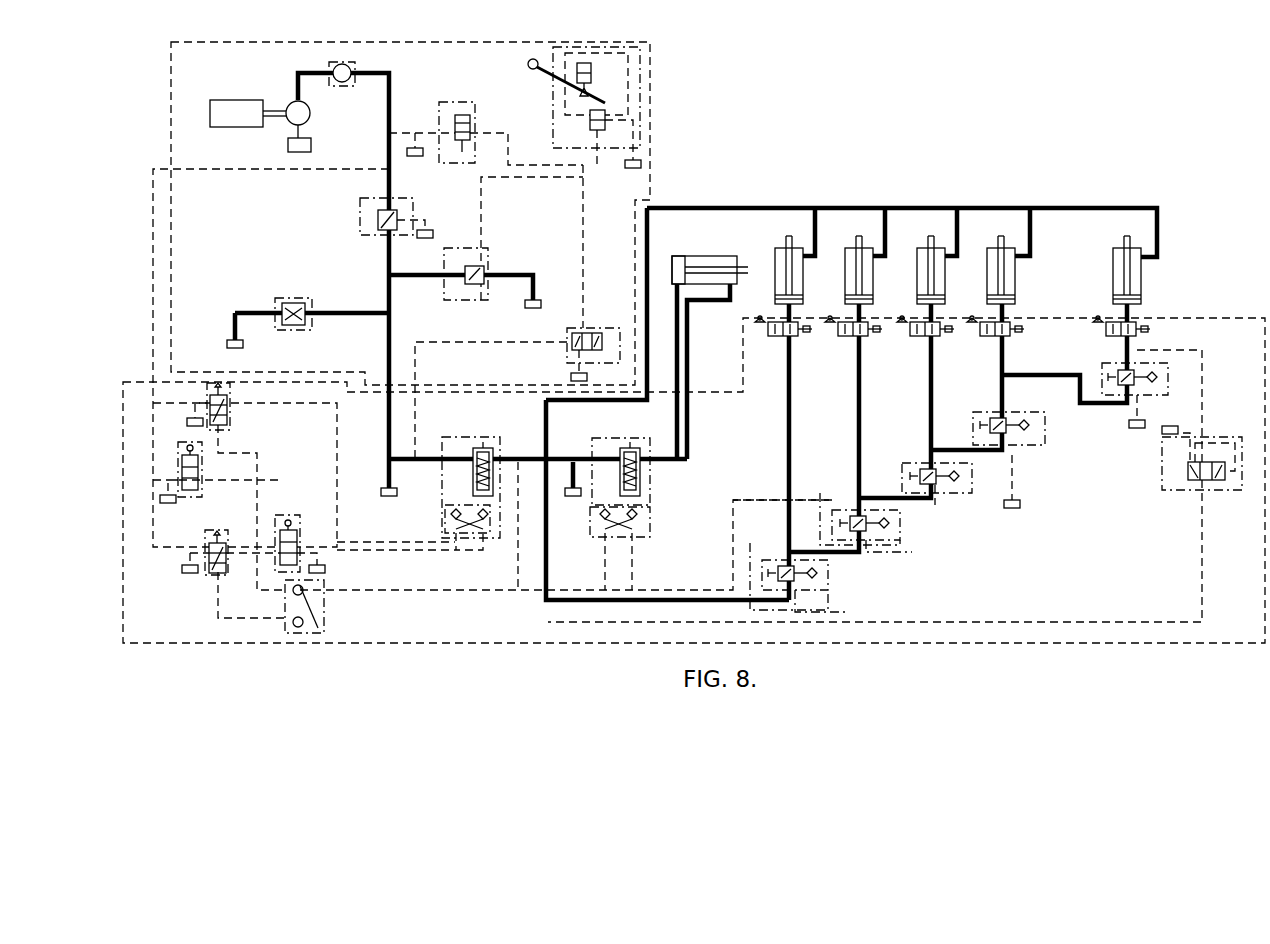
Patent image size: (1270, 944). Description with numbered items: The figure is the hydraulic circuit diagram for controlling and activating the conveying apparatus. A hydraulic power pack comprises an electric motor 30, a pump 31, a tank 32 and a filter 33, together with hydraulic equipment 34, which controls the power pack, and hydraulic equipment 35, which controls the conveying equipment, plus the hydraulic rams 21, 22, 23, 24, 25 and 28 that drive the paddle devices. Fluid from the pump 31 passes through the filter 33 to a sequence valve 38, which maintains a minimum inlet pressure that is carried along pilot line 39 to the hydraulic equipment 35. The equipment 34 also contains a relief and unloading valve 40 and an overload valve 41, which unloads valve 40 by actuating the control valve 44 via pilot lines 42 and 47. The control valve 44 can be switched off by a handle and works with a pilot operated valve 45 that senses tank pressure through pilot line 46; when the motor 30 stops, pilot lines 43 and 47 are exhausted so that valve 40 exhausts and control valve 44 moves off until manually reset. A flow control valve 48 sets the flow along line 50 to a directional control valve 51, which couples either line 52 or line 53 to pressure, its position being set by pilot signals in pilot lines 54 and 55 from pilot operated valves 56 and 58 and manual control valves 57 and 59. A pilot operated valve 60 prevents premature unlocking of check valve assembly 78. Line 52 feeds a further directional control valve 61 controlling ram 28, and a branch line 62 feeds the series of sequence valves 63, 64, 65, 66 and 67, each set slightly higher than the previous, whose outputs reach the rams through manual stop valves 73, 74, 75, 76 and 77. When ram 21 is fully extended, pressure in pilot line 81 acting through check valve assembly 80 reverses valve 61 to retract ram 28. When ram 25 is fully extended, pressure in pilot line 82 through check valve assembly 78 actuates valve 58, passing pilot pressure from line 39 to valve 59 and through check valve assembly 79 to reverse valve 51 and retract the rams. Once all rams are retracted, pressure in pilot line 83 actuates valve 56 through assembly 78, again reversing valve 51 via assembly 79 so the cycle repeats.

The hydraulic ram 21 is at (803, 280).
The hydraulic ram 22 is at (873, 280).
The hydraulic ram 23 is at (945, 280).
The hydraulic ram 24 is at (1015, 280).
The hydraulic ram 25 is at (1141, 280).
The hydraulic ram 28 is at (698, 258).
The electric motor 30 is at (235, 128).
The pump 31 is at (296, 120).
The tank 32 is at (311, 148).
The filter 33 is at (353, 70).
The hydraulic equipment 34 is at (171, 108).
The hydraulic equipment 35 is at (245, 643).
The sequence valve 38 is at (413, 222).
The pilot line 39 is at (218, 172).
The relief and unloading valve 40 is at (445, 280).
The overload valve 41 is at (457, 160).
The pilot line 42 is at (585, 168).
The pilot line 43 is at (583, 262).
The control valve 44 is at (650, 66).
The pilot operated valve 45 is at (597, 330).
The pilot line 46 is at (530, 341).
The pilot line 47 is at (481, 195).
The flow control valve 48 is at (278, 305).
The line 50 is at (392, 362).
The directional control valve 51 is at (500, 452).
The line 52 is at (575, 458).
The line 53 is at (548, 402).
The pilot line 54 is at (405, 545).
The pilot line 55 is at (392, 548).
The pilot operated valve 56 is at (230, 416).
The manual control valve 57 is at (202, 474).
The pilot operated valve 58 is at (220, 532).
The manual control valve 59 is at (282, 518).
The pilot operated valve 60 is at (1162, 458).
The directional control valve 61 is at (650, 452).
The branch line 62 is at (552, 582).
The sequence valve 63 is at (830, 582).
The sequence valve 64 is at (900, 527).
The sequence valve 65 is at (978, 480).
The sequence valve 66 is at (1047, 432).
The sequence valve 67 is at (1172, 379).
The manual stop valve 73 is at (778, 338).
The manual stop valve 74 is at (850, 338).
The manual stop valve 75 is at (922, 338).
The manual stop valve 76 is at (992, 338).
The manual stop valve 77 is at (1115, 338).
The pilot operated check valve assembly 78 is at (324, 614).
The pilot operated check valve assembly 79 is at (492, 517).
The pilot operated check valve assembly 80 is at (600, 514).
The pilot line 81 is at (800, 499).
The pilot line 82 is at (1203, 552).
The pilot line 83 is at (518, 535).